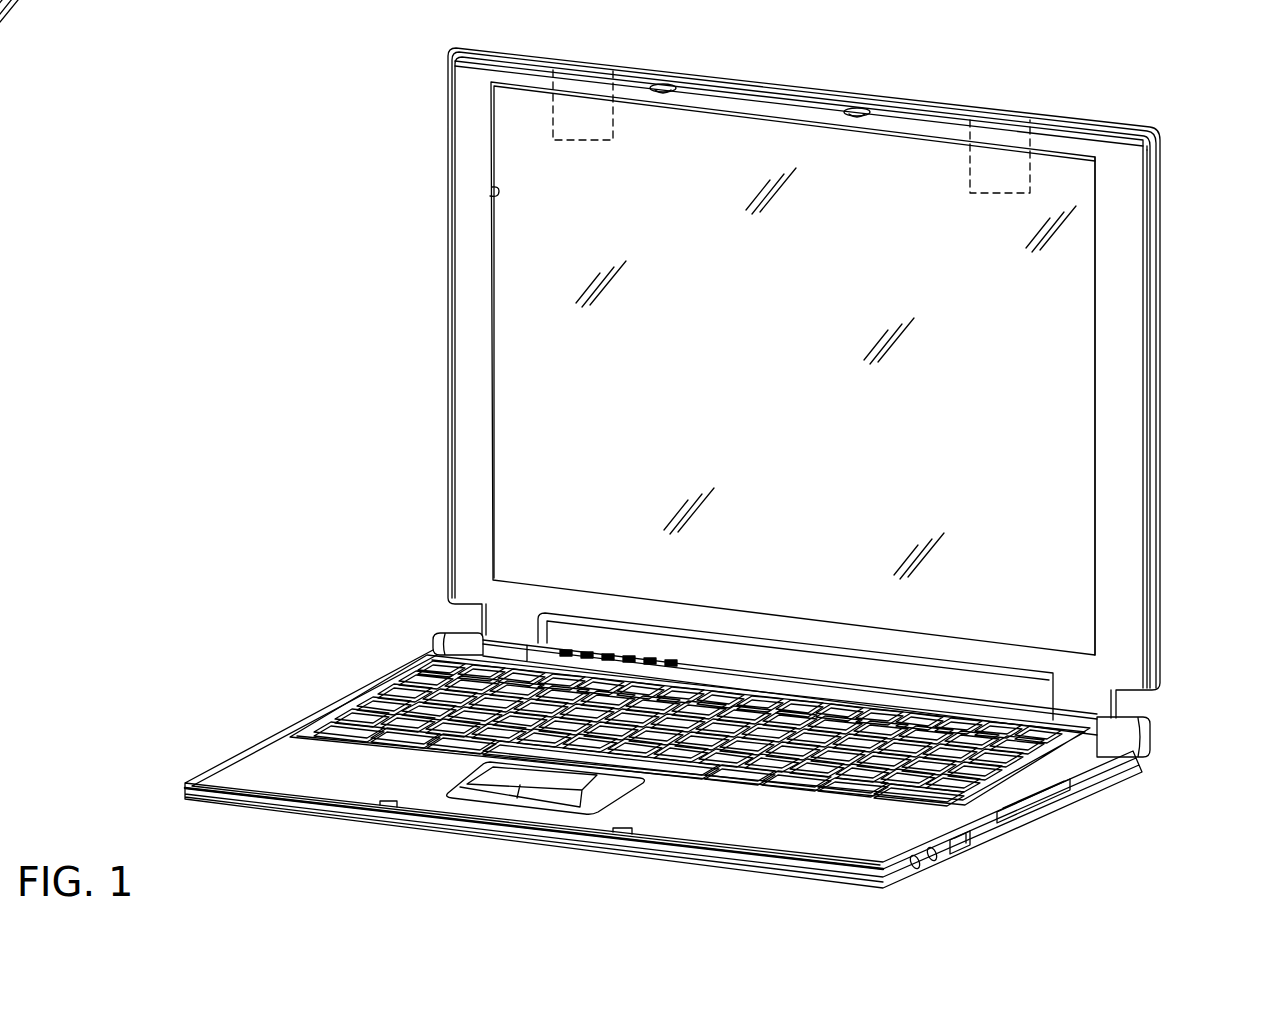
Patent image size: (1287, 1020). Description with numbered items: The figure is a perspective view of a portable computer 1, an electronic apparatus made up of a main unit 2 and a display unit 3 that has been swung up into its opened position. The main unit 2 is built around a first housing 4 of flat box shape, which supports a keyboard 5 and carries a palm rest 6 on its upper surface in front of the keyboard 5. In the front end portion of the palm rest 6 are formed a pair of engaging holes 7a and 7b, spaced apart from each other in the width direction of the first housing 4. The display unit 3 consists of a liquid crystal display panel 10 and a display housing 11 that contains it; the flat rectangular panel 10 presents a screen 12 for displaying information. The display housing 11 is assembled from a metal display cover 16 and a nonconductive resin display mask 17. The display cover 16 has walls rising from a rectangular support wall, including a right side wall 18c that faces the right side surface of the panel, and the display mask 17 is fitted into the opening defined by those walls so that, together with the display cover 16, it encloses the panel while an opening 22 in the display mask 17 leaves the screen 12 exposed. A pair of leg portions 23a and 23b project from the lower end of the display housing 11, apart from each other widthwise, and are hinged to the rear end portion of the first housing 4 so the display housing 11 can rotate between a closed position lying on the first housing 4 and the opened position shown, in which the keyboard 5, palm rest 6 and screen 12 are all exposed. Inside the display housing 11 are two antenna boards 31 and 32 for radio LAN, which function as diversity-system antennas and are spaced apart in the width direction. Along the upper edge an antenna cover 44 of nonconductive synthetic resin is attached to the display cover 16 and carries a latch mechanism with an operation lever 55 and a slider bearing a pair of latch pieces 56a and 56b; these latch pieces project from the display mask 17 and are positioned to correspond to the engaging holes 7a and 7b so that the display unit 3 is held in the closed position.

The portable computer 1 is at (1206, 292).
The main unit 2 is at (254, 819).
The display unit 3 is at (438, 347).
The first housing 4 is at (707, 856).
The keyboard 5 is at (350, 716).
The palm rest 6 is at (767, 832).
The engaging hole 7a is at (392, 807).
The engaging hole 7b is at (622, 835).
The liquid crystal display panel 10 is at (1070, 457).
The display housing 11 is at (1233, 510).
The screen 12 is at (547, 327).
The display cover 16 is at (1160, 585).
The display mask 17 is at (1128, 535).
The right side wall 18c is at (1157, 385).
The opening 22 is at (490, 196).
The leg portion 23a is at (498, 620).
The leg portion 23b is at (1098, 700).
The antenna board 31 is at (574, 158).
The antenna board 32 is at (997, 208).
The antenna cover 44 is at (1046, 121).
The operation lever 55 is at (770, 87).
The latch piece 56a is at (661, 96).
The latch piece 56b is at (856, 118).